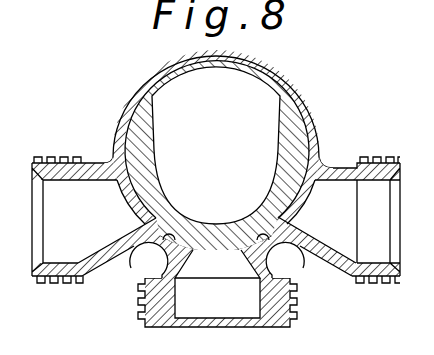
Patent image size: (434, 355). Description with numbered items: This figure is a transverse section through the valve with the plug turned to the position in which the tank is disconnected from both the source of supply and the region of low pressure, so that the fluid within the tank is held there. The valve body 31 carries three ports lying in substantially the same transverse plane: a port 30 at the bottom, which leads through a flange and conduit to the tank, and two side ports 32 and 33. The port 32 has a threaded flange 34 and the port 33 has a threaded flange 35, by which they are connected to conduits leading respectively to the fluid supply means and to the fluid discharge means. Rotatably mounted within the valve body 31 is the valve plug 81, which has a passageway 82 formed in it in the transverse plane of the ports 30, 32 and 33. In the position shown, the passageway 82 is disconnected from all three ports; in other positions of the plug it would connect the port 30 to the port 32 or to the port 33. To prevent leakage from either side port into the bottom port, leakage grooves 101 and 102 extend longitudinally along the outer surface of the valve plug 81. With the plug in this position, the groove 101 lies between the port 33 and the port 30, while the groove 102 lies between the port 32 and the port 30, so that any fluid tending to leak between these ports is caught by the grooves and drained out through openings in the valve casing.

The port 30 is at (217, 284).
The valve body 31 is at (302, 102).
The port 32 is at (101, 217).
The port 33 is at (331, 217).
The threaded flange 34 is at (56, 157).
The threaded flange 35 is at (385, 158).
The valve plug 81 is at (298, 139).
The passageway 82 is at (216, 145).
The leakage groove 101 is at (270, 246).
The leakage groove 102 is at (133, 270).